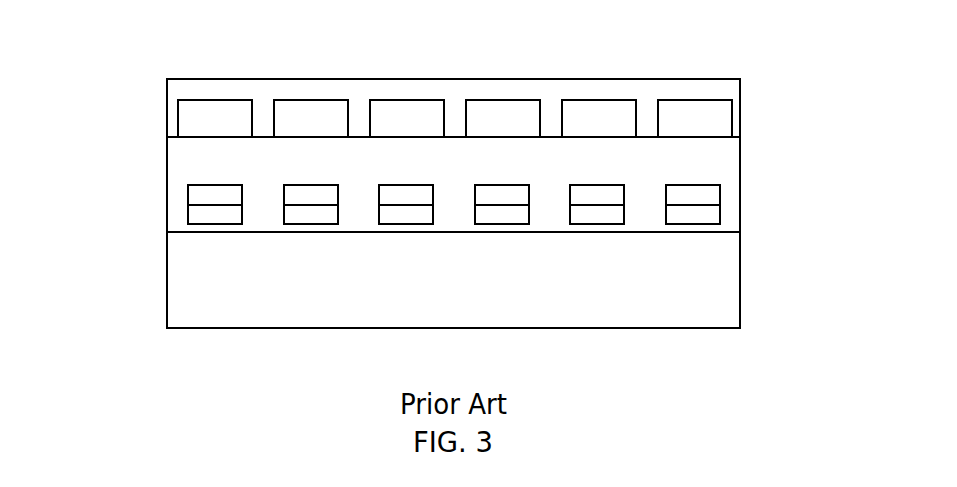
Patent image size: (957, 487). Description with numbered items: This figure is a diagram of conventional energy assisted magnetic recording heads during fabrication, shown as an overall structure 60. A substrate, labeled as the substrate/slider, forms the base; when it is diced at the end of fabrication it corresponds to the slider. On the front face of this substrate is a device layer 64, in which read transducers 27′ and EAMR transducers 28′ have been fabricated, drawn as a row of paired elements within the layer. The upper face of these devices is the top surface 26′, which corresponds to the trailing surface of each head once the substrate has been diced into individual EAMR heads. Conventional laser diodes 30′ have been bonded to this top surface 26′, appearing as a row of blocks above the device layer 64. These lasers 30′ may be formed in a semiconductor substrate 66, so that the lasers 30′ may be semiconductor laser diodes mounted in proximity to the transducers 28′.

The prior art magnetic recording head / transducer structure 60 is at (470, 34).
The top surface 26′ is at (108, 137).
The semiconductor substrate 66 is at (166, 117).
The device layer 64 is at (166, 163).
The conventional laser diodes 30′ is at (215, 100).
The EAMR transducers 28′ is at (215, 185).
The read transducers 27′ is at (215, 224).